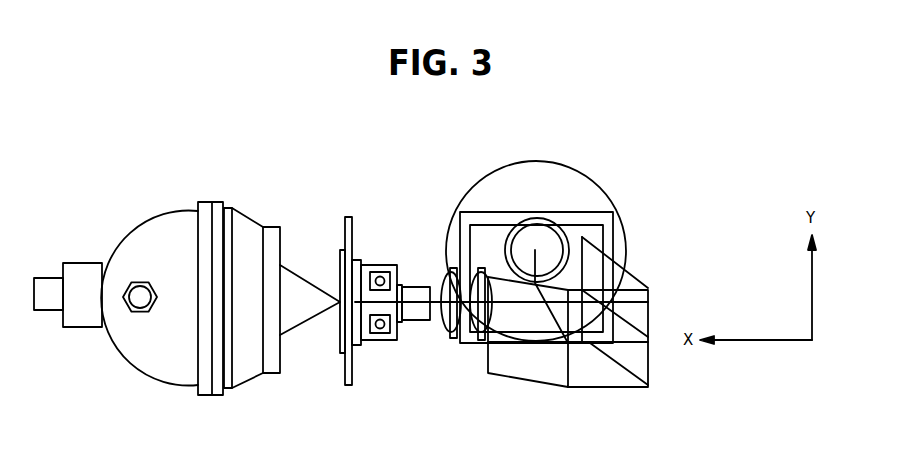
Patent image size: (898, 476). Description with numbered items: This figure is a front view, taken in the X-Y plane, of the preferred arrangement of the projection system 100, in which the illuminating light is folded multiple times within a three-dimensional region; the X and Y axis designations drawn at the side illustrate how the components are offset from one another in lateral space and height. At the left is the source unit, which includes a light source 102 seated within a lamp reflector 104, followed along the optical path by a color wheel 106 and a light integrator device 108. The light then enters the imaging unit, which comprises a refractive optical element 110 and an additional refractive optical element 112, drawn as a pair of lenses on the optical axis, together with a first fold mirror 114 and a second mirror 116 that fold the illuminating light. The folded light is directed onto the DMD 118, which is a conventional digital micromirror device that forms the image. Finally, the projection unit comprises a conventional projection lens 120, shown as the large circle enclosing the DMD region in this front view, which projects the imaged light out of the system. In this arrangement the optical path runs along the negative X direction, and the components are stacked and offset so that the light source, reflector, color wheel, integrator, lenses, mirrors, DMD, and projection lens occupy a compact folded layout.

The projection system 100 is at (706, 155).
The light source 102 is at (138, 279).
The lamp reflector 104 is at (207, 202).
The color wheel 106 is at (349, 217).
The light integrator device 108 is at (412, 286).
The refractive optical element 110 is at (450, 337).
The additional refractive optical element 112 is at (483, 340).
The first fold mirror 114 is at (633, 275).
The second mirror 116 is at (607, 389).
The DMD 118 is at (592, 213).
The projection lens 120 is at (535, 158).